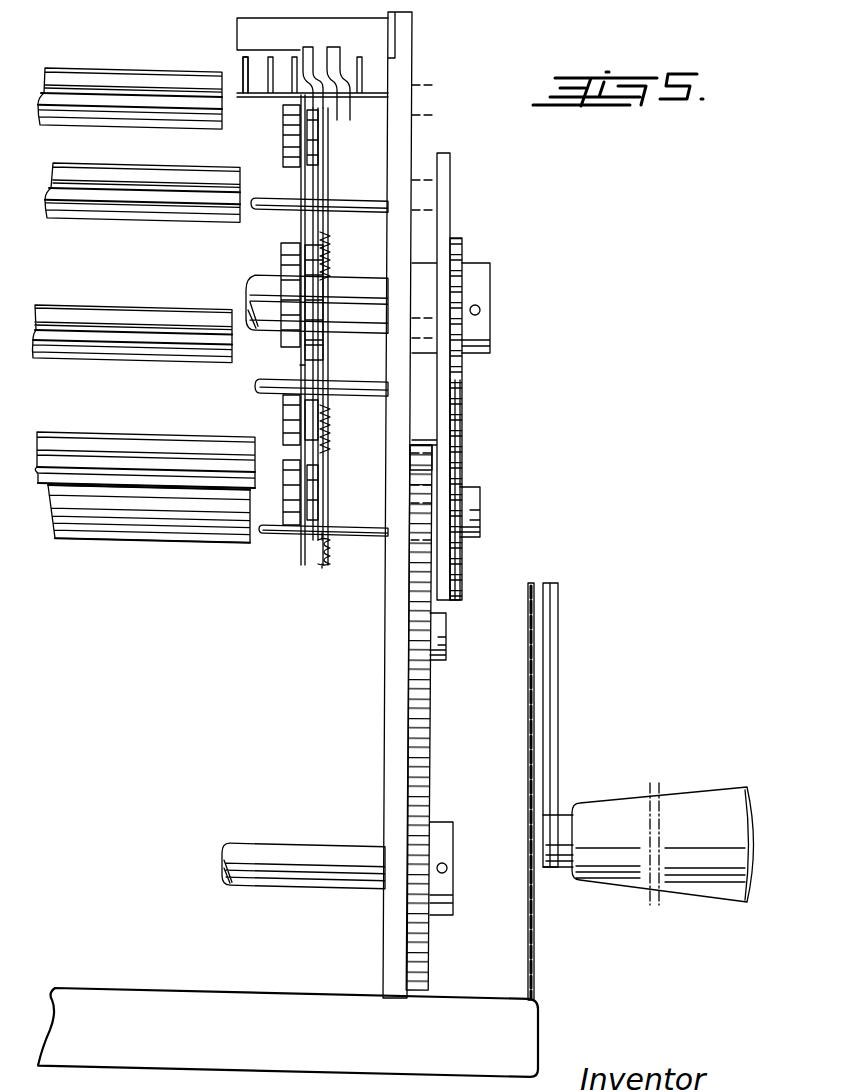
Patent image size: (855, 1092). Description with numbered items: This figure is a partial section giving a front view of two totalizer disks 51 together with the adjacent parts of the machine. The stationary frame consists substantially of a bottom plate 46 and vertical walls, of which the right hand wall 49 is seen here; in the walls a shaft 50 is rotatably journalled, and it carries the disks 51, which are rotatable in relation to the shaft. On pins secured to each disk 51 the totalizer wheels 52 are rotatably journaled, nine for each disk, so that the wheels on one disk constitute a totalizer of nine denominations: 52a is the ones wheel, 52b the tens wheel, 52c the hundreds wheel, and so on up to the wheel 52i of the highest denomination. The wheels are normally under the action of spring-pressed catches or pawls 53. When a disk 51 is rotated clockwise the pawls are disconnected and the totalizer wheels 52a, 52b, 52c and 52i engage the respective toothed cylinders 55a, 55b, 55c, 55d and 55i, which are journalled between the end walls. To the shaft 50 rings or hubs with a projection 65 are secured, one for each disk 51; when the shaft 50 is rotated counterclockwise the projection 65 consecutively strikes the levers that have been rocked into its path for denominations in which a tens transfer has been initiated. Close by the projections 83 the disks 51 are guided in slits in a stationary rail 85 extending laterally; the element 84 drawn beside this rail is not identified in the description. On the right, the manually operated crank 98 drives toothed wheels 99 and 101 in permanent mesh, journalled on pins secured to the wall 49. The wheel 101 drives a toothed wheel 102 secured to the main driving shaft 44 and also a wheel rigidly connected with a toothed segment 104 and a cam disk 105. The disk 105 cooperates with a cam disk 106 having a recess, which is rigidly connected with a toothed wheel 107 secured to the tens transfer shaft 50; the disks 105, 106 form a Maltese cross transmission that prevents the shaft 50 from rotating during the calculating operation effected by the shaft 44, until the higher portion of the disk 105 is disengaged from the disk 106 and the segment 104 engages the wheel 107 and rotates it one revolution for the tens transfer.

The main driving shaft 44 is at (272, 845).
The bottom plate 46 is at (278, 998).
The vertical wall 49 is at (412, 48).
The shaft 50 is at (252, 278).
The totalizer disk 51 is at (320, 182).
The totalizer wheels 52 is at (272, 540).
The ones wheel 52a is at (323, 402).
The tens wheel 52b is at (328, 262).
The hundreds wheel 52c is at (318, 130).
The totalizer wheel 52i is at (320, 470).
The spring-pressed pawl 53 is at (324, 548).
The toothed cylinder 55a is at (165, 447).
The toothed cylinder 55b is at (60, 355).
The toothed cylinder 55c is at (70, 212).
The toothed cylinder 55d is at (97, 82).
The toothed cylinder 55i is at (93, 530).
The projection 65 is at (325, 347).
The projection 83 is at (237, 50).
The comb finger 84 is at (245, 97).
The stationary rail 85 is at (237, 24).
The crank 98 is at (620, 805).
The toothed wheel 99 is at (420, 483).
The toothed wheel 101 is at (420, 710).
The toothed wheel 102 is at (420, 942).
The toothed segment 104 is at (452, 390).
The cam disk 105 is at (440, 565).
The cam disk 106 is at (445, 178).
The toothed wheel 107 is at (462, 253).